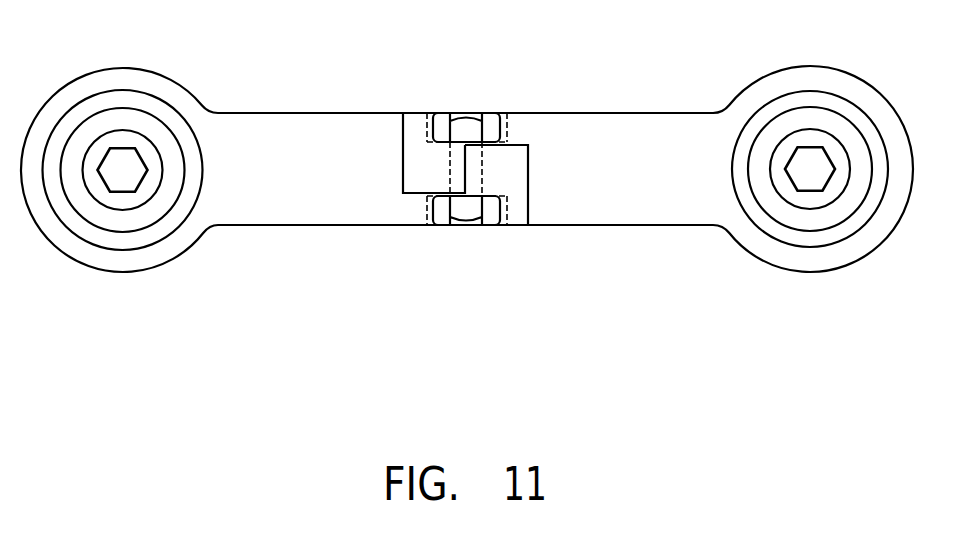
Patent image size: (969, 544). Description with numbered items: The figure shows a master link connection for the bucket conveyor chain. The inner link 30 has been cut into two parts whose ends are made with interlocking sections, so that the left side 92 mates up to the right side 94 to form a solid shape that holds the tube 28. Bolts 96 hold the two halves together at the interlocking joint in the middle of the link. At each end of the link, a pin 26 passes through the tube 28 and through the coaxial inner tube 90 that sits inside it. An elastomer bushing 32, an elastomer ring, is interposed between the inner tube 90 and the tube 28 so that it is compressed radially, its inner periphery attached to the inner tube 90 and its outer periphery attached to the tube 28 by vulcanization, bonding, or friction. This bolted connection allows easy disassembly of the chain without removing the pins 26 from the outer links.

The pin 26 is at (118, 147).
The tube 28 is at (795, 238).
The inner link 30 is at (273, 113).
The elastomer bushing 32 is at (833, 217).
The inner tube 90 is at (818, 140).
The left side 92 is at (332, 225).
The right side 94 is at (585, 225).
The bolts 96 is at (452, 113).